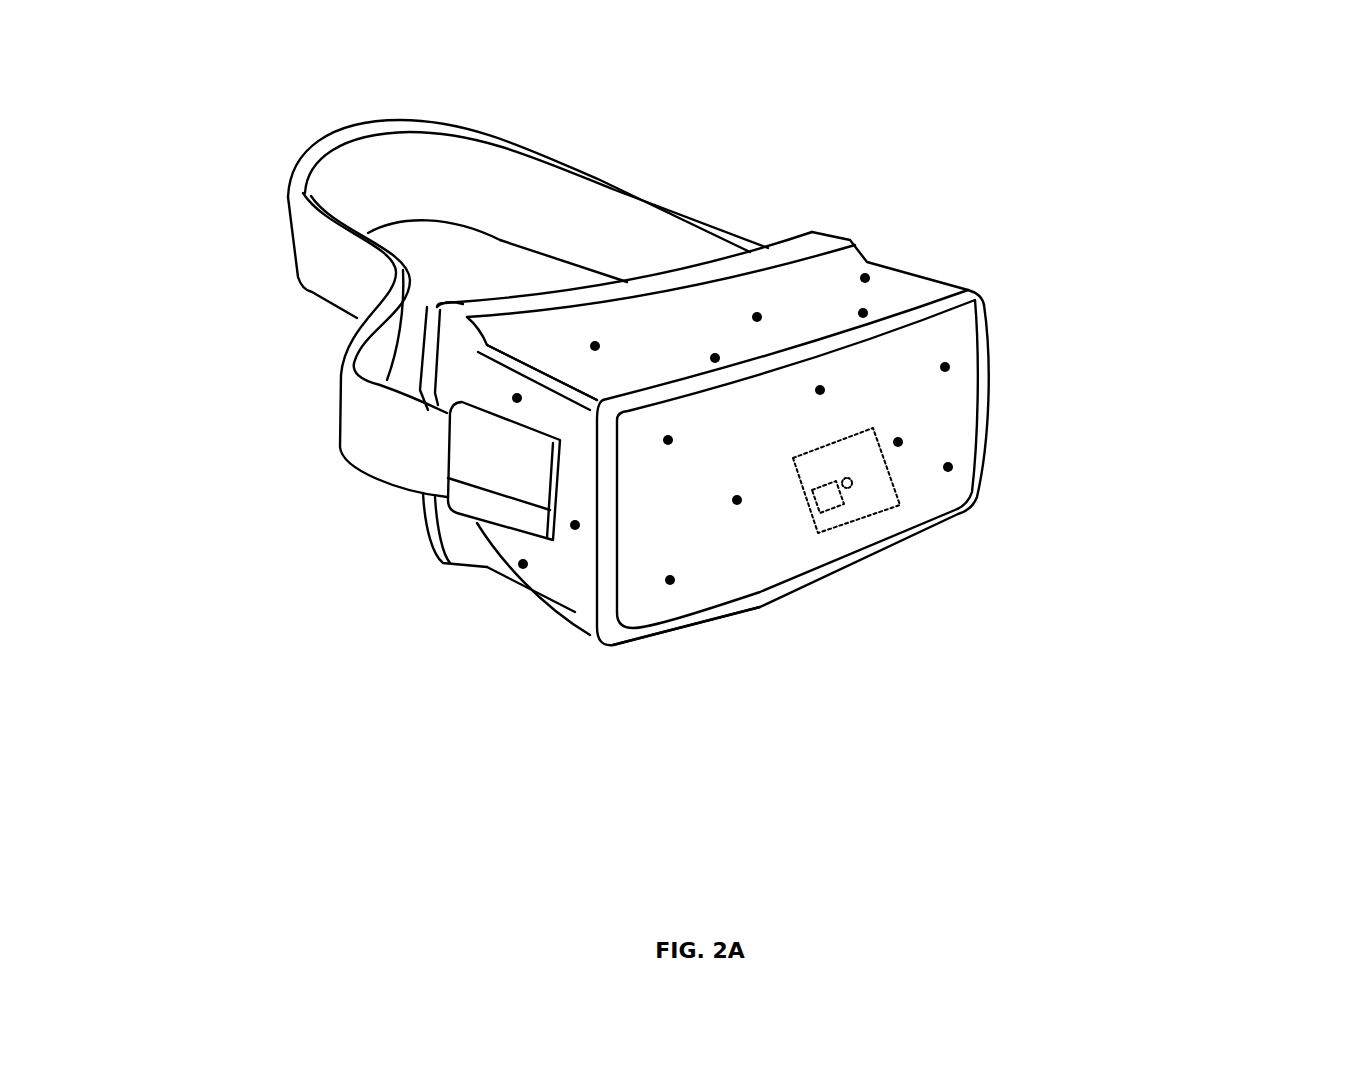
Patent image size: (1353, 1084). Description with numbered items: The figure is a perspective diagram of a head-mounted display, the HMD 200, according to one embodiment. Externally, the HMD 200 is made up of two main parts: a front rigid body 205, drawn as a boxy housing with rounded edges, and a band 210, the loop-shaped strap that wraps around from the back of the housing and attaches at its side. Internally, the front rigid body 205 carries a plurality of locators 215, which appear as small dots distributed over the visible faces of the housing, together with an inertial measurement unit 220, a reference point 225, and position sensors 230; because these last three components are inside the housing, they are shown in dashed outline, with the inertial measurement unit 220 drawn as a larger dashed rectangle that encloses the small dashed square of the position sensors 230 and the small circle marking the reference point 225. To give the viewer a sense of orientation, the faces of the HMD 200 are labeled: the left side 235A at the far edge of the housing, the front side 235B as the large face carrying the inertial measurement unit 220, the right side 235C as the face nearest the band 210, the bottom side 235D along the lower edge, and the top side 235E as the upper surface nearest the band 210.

The HMD 200 is at (113, 65).
The front rigid body 205 is at (684, 459).
The band 210 is at (642, 198).
The locators 215 is at (950, 466).
The inertial measurement unit 220 is at (900, 497).
The reference point 225 is at (848, 490).
The position sensors 230 is at (823, 497).
The left side 235A is at (943, 280).
The front side 235B is at (640, 580).
The right side 235C is at (567, 562).
The bottom side 235D is at (531, 615).
The top side 235E is at (613, 357).